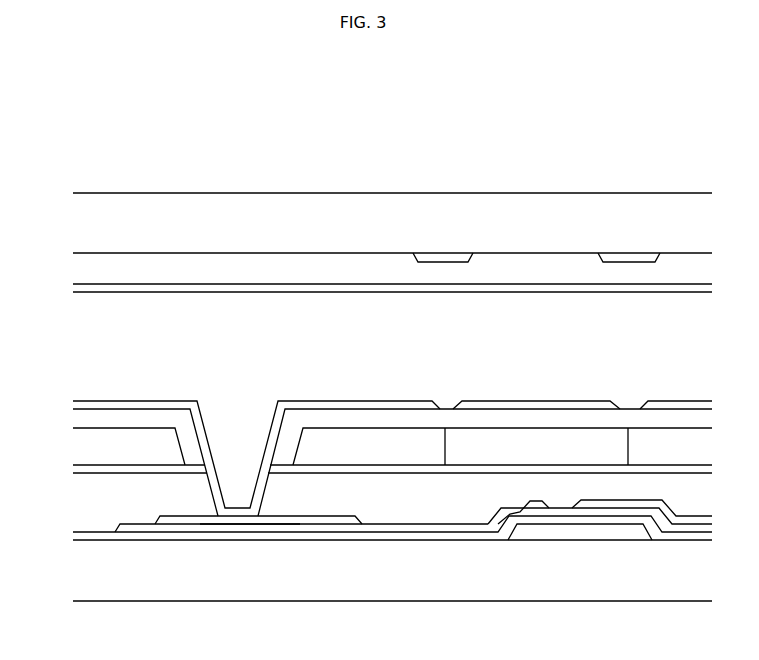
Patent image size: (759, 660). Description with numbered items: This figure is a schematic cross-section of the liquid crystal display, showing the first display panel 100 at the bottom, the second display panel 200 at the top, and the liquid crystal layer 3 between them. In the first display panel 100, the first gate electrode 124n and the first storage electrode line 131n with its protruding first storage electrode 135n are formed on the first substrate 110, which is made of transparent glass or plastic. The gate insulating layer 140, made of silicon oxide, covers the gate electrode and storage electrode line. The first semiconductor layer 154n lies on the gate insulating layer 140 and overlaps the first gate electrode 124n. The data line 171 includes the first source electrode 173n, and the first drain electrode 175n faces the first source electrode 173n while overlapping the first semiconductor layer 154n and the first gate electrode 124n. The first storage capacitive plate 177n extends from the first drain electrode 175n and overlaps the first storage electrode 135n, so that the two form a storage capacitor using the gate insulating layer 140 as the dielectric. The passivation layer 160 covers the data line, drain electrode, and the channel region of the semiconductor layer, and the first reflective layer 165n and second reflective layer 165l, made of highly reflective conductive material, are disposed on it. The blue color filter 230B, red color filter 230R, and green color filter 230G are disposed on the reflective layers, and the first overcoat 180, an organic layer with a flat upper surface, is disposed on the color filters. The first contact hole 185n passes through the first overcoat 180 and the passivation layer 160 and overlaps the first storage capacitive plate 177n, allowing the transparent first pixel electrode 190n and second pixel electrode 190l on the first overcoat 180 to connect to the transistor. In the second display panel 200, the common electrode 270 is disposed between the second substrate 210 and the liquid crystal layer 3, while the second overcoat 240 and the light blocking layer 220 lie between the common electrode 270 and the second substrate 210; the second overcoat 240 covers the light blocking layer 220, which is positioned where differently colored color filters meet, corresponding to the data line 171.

The liquid crystal layer 3 is at (58, 292).
The second display panel 200 is at (60, 193).
The second substrate 210 is at (292, 198).
The second overcoat 240 is at (362, 264).
The light blocking layer 220 is at (440, 258).
The common electrode 270 is at (200, 288).
The first display panel 100 is at (58, 400).
The second pixel electrode 190l is at (300, 402).
The first pixel electrode 190n is at (493, 402).
The first overcoat 180 is at (444, 412).
The first contact hole 185n is at (235, 448).
The blue color filter 230B is at (259, 446).
The red color filter 230R is at (536, 446).
The green color filter 230G is at (670, 443).
The second reflective layer 165l is at (150, 462).
The first reflective layer 165n is at (580, 478).
The passivation layer 160 is at (404, 485).
The first storage capacitive plate 177n is at (187, 518).
The first storage electrode line 131n is at (333, 534).
The first storage electrode 135n is at (248, 534).
The first semiconductor layer 154n is at (580, 510).
The gate insulating layer 140 is at (442, 536).
The first gate electrode 124n is at (560, 534).
The first drain electrode 175n is at (530, 510).
The first source electrode 173n is at (596, 503).
The data line 171 is at (653, 508).
The first substrate 110 is at (396, 590).